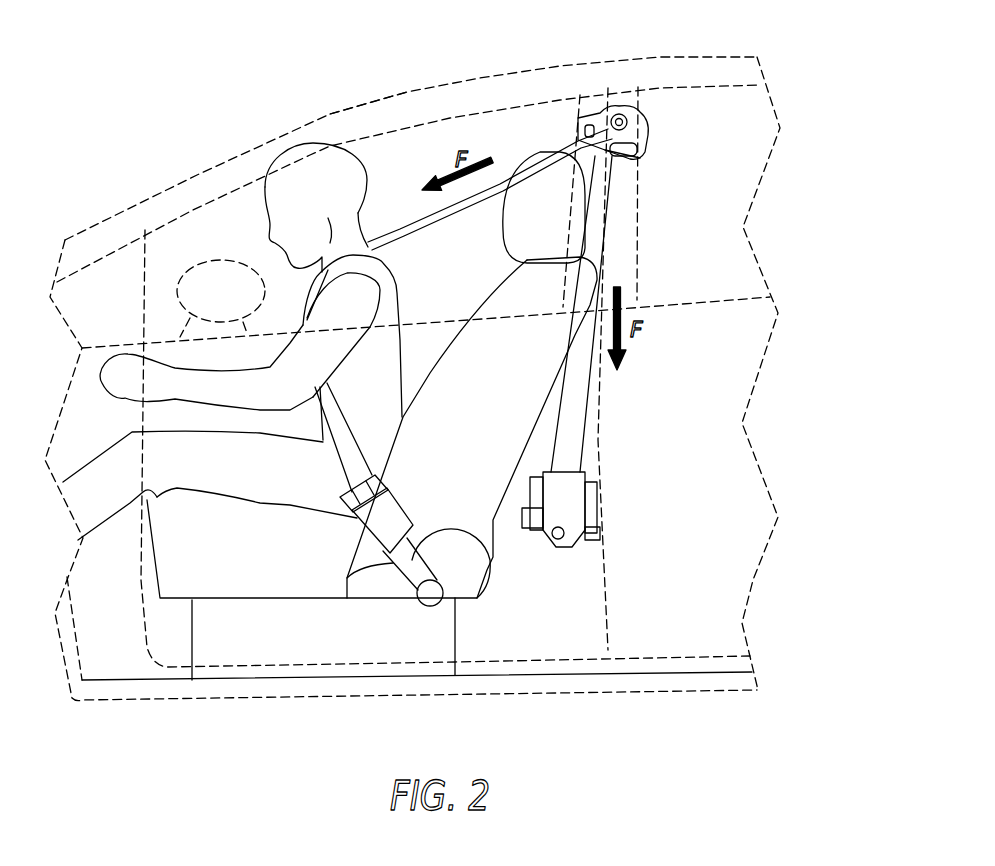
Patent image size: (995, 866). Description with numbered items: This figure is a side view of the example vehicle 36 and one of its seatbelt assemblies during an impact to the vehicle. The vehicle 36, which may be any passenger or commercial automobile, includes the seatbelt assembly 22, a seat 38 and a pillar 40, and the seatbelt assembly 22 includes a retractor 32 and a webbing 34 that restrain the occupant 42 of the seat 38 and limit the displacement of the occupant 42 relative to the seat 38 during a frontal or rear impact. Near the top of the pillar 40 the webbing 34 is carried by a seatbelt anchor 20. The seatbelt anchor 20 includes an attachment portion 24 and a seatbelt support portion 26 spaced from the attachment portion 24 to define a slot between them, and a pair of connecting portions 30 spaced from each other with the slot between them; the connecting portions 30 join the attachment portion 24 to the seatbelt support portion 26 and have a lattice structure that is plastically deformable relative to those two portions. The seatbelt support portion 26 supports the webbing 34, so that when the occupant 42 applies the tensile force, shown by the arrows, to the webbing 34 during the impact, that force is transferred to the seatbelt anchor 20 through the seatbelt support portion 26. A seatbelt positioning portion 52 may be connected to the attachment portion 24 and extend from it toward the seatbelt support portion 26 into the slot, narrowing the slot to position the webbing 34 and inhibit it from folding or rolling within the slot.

The seatbelt anchor 20 is at (648, 127).
The seatbelt assembly 22 is at (797, 142).
The attachment portion 24 is at (603, 133).
The seatbelt support portion 26 is at (623, 170).
The connecting portions 30 is at (577, 133).
The retractor 32 is at (568, 507).
The webbing 34 is at (443, 217).
The vehicle 36 is at (407, 92).
The seat 38 is at (463, 575).
The pillar 40 is at (610, 207).
The occupant 42 is at (379, 405).
The seatbelt positioning portion 52 is at (600, 133).